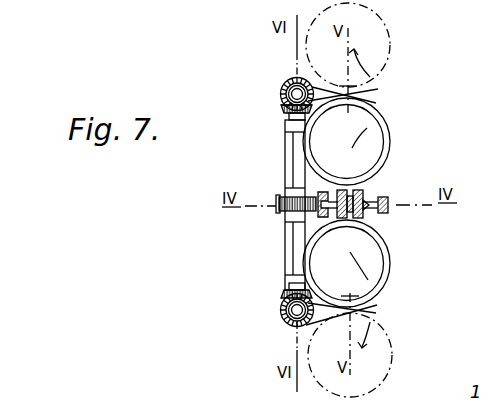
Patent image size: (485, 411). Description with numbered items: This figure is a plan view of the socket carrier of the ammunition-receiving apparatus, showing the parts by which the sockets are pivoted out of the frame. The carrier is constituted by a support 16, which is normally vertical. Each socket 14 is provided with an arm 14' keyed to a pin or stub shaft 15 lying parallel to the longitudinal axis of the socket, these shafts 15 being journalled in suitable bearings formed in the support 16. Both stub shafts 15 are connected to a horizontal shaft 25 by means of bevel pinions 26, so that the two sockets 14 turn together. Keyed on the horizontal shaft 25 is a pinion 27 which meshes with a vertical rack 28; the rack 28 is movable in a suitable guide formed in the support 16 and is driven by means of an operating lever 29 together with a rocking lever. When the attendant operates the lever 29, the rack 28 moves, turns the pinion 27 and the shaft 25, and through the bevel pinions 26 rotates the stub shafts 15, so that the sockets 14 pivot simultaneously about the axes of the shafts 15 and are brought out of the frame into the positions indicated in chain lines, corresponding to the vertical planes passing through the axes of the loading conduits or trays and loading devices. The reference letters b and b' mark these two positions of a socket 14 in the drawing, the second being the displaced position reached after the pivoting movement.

The socket 14 is at (370, 202).
The arm 14' is at (365, 200).
The stub shaft 15 is at (284, 93).
The support 16 is at (287, 254).
The horizontal shaft 25 is at (296, 145).
The bevel pinion 26 is at (283, 99).
The pinion 27 is at (281, 197).
The vertical rack 28 is at (319, 212).
The operating lever 29 is at (358, 203).
The roller position b is at (358, 263).
The displaced roller position b' is at (365, 345).